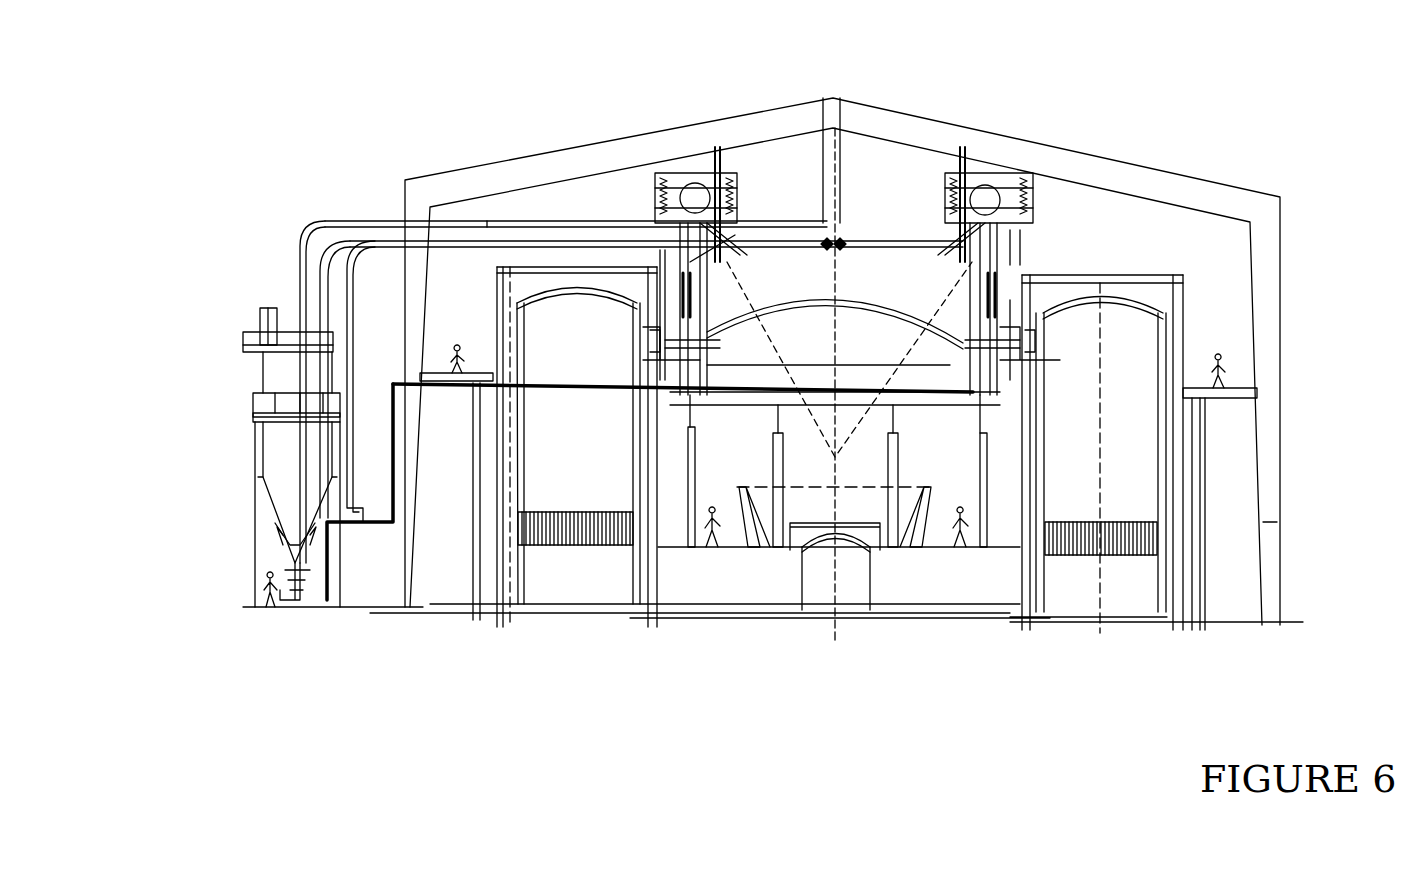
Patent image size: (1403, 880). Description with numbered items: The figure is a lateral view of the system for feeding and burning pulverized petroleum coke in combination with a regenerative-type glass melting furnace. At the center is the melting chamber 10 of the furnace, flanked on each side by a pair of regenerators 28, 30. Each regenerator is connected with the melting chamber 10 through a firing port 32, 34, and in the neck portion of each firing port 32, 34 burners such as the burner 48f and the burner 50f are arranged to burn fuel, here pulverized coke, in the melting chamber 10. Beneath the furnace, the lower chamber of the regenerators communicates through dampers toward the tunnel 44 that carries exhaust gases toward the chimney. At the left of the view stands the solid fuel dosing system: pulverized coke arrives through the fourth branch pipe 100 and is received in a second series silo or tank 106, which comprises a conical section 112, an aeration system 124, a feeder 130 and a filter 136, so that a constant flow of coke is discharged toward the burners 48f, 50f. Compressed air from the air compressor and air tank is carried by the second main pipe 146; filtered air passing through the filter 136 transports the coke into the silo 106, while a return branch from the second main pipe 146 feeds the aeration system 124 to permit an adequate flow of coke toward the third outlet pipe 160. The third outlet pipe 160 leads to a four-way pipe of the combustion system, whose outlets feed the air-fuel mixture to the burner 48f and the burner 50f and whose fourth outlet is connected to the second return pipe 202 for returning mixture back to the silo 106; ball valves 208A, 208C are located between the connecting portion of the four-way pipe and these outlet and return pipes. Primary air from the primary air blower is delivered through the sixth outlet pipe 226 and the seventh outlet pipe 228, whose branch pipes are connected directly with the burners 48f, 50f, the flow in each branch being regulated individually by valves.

The melting chamber 10 is at (915, 380).
The regenerator 28 is at (545, 430).
The regenerator 30 is at (1073, 490).
The firing port 32 is at (640, 347).
The firing port 34 is at (1030, 335).
The tunnel 44 is at (810, 582).
The burner 48f is at (720, 348).
The burner 50f is at (965, 345).
The fourth branch pipe 100 is at (325, 238).
The second series silo or tank 106 is at (257, 413).
The conical section 112 is at (277, 467).
The aeration system 124 is at (277, 533).
The feeder 130 is at (287, 553).
The filter 136 is at (260, 322).
The second main pipe 146 is at (340, 238).
The third outlet pipe 160 is at (487, 221).
The second return pipe 202 is at (320, 292).
The ball valve 208A is at (827, 240).
The ball valve 208C is at (840, 243).
The sixth outlet pipe 226 is at (1000, 283).
The seventh outlet pipe 228 is at (660, 250).